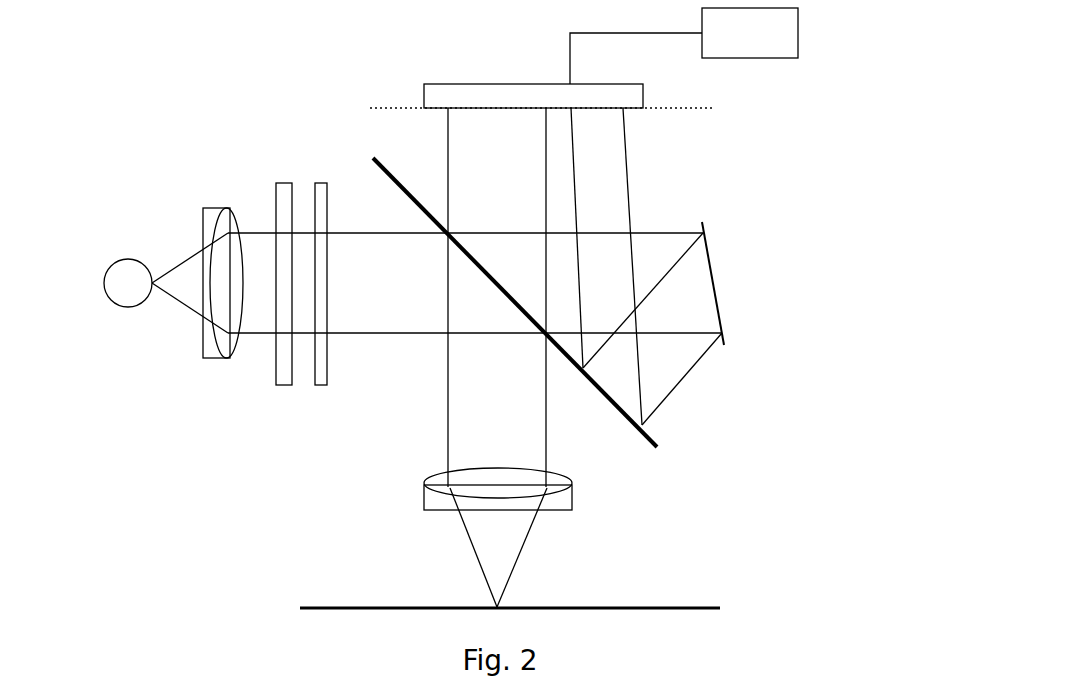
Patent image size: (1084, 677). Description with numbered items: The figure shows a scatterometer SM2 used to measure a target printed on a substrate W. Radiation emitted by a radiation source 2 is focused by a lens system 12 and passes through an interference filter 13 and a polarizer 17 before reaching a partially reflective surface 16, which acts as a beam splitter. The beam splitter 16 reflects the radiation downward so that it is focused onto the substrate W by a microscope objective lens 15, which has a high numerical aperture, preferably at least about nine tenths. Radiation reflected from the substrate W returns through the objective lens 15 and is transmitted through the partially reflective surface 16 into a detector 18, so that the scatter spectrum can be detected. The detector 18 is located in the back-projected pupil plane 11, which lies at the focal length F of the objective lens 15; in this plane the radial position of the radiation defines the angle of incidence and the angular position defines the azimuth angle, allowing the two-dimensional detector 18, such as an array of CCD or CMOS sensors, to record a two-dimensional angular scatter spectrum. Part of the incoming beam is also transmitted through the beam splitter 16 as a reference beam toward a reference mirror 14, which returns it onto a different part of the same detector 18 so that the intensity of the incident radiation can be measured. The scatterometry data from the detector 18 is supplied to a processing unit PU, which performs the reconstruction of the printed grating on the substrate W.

The radiation source 2 is at (122, 293).
The back-projected pupil plane 11 is at (708, 108).
The lens system 12 is at (215, 208).
The interference filter 13 is at (287, 183).
The reference mirror 14 is at (703, 232).
The microscope objective lens 15 is at (424, 498).
The partially reflective surface 16 is at (648, 438).
The polarizer 17 is at (321, 183).
The detector 18 is at (456, 84).
The scatterometer SM2 is at (158, 193).
The processing unit PU is at (750, 33).
The substrate W is at (616, 607).
The focal length F is at (403, 110).